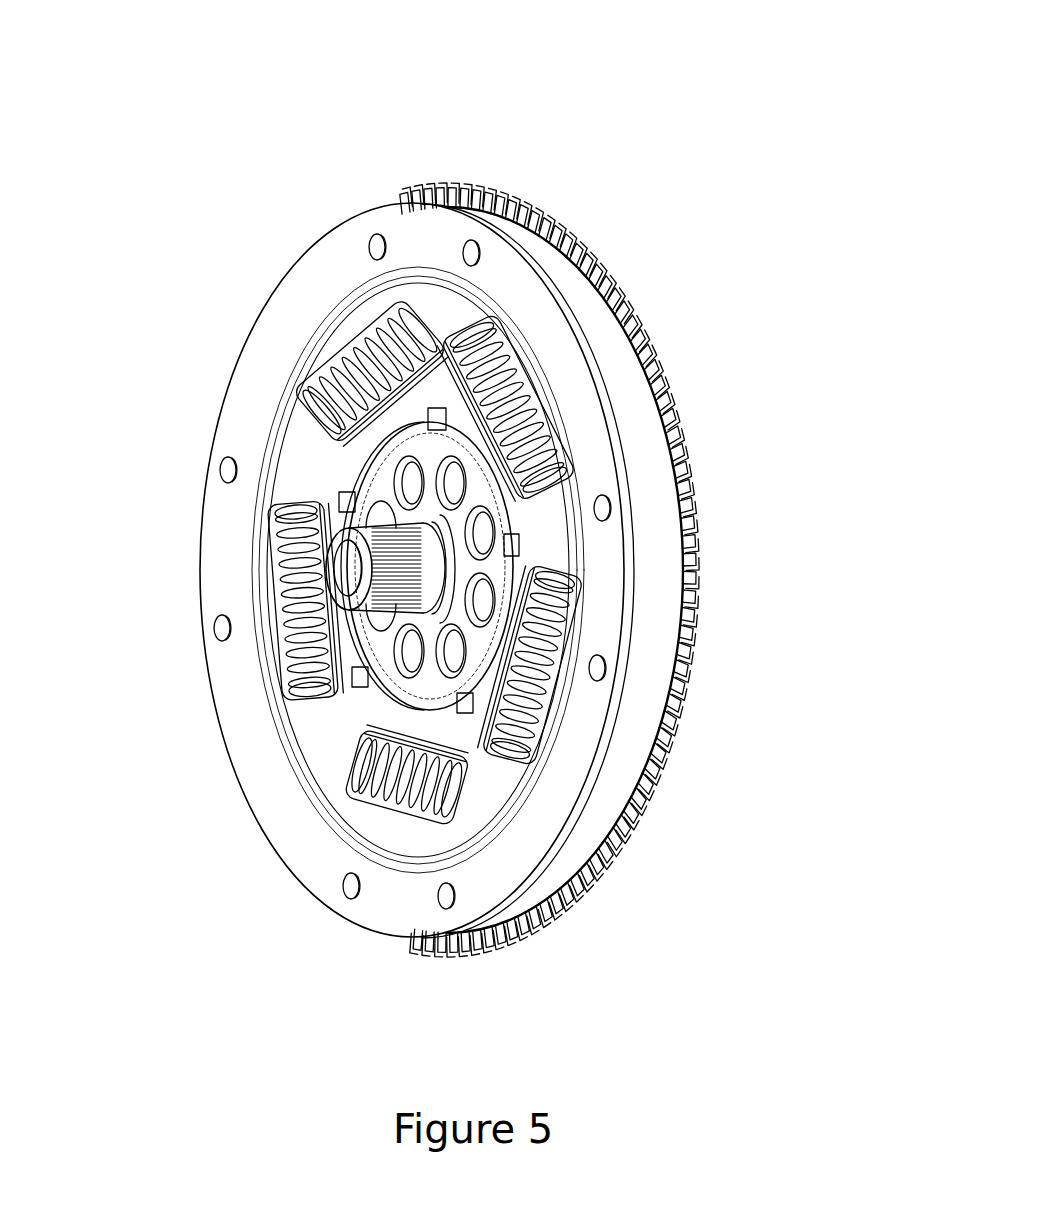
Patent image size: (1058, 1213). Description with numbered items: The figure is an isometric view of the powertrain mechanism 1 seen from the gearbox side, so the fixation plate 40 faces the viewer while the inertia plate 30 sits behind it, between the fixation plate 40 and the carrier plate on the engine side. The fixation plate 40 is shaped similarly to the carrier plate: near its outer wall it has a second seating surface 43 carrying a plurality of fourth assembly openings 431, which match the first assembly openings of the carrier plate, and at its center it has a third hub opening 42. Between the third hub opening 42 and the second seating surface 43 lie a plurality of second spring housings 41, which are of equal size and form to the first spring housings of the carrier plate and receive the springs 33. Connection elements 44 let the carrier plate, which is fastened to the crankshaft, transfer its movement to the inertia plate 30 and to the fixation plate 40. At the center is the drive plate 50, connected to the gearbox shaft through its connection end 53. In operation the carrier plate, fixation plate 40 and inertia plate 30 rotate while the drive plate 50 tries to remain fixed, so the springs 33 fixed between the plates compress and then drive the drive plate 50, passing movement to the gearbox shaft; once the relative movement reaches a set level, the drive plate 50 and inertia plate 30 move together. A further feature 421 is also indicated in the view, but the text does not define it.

The powertrain mechanism 1 is at (570, 168).
The inertia plate 30 is at (600, 813).
The springs 33 is at (363, 367).
The fixation plate 40 is at (207, 793).
The second spring housings 41 is at (300, 600).
The third hub opening 42 is at (367, 455).
The second seating surface 43 is at (282, 825).
The connection elements 44 is at (345, 893).
The drive plate 50 is at (483, 487).
The connection end 53 is at (437, 577).
The stop tab 421 is at (515, 540).
The fourth assembly openings 431 is at (450, 905).